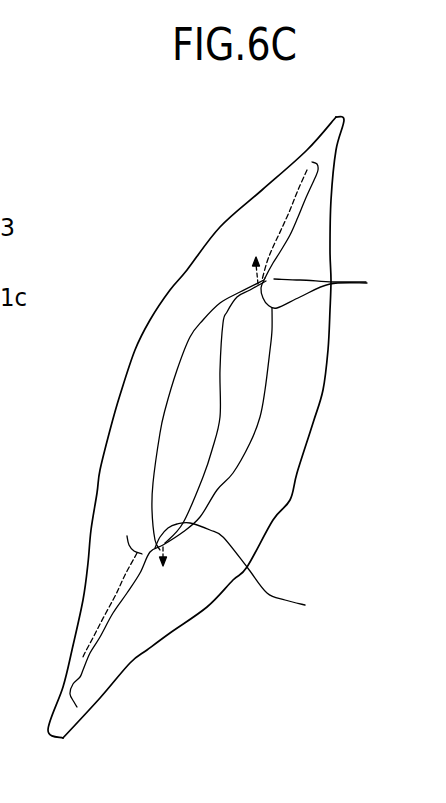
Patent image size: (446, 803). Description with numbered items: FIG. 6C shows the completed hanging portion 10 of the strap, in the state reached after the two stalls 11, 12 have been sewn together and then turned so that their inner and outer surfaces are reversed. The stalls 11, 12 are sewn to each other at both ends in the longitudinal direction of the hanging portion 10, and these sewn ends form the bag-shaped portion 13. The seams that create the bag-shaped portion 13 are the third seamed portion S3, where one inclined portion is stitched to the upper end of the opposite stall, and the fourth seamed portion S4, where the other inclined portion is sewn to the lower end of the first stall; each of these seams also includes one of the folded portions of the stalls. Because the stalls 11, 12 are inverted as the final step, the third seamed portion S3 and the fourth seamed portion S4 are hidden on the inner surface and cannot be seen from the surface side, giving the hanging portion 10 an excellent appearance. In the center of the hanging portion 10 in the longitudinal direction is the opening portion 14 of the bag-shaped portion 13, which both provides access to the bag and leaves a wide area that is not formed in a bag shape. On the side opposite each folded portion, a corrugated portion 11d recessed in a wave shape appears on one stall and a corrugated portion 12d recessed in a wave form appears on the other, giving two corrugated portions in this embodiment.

The hanging portion 10 is at (211, 427).
The stall 11 is at (293, 405).
The corrugated portion 11d is at (277, 258).
The stall 12 is at (137, 428).
The corrugated portion 12d is at (132, 574).
The bag-shaped portion 13 is at (273, 444).
The opening portion 14 is at (238, 432).
The third seamed portion S3 is at (302, 212).
The fourth seamed portion S4 is at (120, 620).